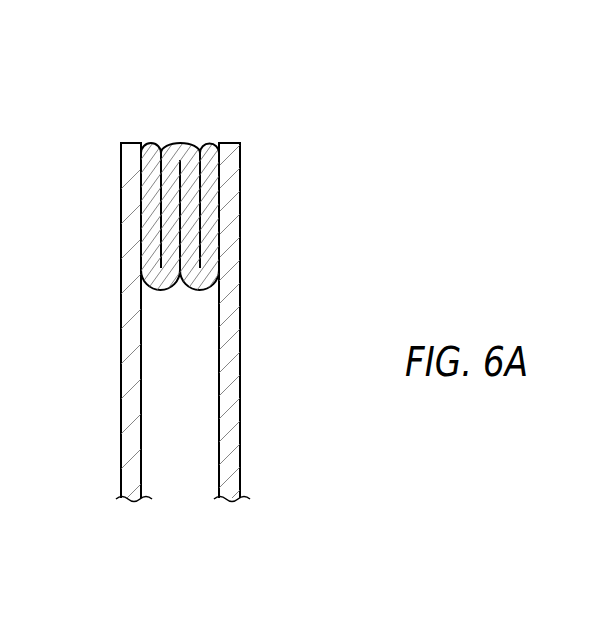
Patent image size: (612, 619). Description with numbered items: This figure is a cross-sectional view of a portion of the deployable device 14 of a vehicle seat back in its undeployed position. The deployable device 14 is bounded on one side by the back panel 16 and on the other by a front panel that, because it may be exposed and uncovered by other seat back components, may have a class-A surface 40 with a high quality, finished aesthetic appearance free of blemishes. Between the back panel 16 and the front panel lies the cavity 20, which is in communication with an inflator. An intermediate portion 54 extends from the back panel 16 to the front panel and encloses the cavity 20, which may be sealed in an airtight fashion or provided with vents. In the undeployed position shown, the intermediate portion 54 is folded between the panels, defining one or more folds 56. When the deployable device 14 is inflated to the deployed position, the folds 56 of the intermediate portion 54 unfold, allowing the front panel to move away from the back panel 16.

The deployable device 14 is at (268, 242).
The back panel 16 is at (120, 386).
The cavity 20 is at (179, 432).
The class-A surface 40 is at (240, 415).
The intermediate portion 54 is at (182, 147).
The folds 56 is at (207, 143).